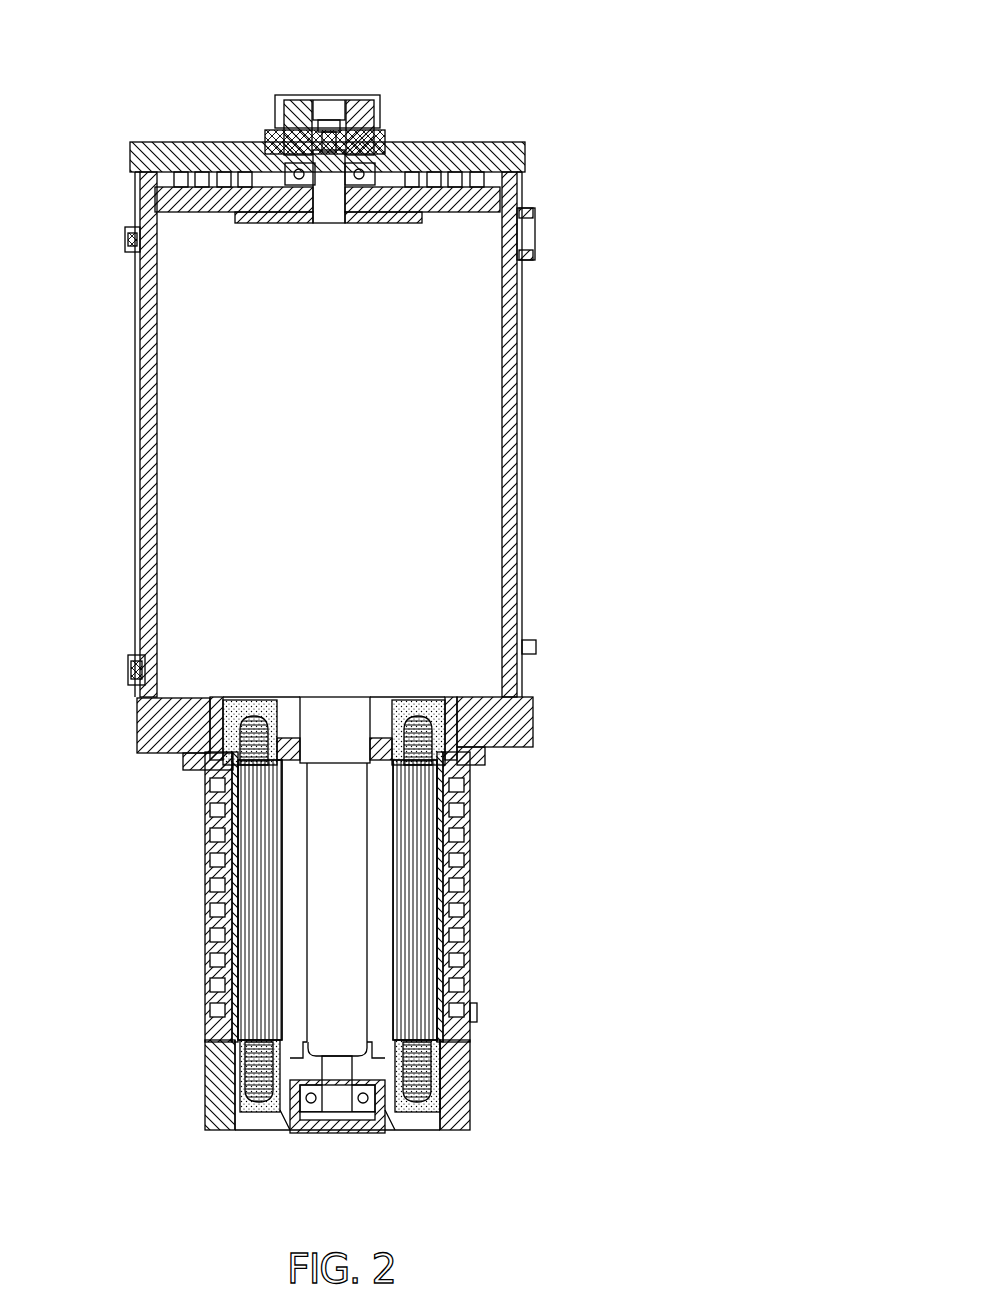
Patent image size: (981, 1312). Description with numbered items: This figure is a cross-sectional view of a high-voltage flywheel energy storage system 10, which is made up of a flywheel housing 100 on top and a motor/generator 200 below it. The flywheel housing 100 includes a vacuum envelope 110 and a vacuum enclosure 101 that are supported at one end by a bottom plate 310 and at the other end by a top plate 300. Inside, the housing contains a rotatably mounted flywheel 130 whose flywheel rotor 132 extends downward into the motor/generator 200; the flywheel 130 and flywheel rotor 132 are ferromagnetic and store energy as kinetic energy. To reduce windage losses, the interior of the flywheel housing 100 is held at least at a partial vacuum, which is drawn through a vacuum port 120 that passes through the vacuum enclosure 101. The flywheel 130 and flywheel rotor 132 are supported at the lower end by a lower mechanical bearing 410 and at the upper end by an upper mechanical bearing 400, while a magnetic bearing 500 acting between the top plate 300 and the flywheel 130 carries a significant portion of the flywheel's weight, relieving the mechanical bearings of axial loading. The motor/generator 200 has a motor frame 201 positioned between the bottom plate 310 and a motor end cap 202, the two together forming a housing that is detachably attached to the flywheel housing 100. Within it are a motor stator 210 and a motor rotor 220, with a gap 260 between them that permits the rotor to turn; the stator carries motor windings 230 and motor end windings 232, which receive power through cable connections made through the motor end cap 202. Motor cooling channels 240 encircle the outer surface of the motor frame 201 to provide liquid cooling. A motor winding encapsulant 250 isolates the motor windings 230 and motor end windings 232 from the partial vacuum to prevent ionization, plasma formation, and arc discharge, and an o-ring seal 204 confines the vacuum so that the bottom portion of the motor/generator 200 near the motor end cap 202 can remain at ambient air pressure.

The high-voltage flywheel energy storage system 10 is at (586, 45).
The flywheel housing 100 is at (634, 402).
The vacuum enclosure 101 is at (527, 348).
The vacuum envelope 110 is at (520, 400).
The vacuum port 120 is at (549, 238).
The flywheel 130 is at (480, 512).
The flywheel rotor 132 is at (310, 830).
The motor/generator 200 is at (587, 945).
The motor frame 201 is at (472, 1030).
The motor end cap 202 is at (470, 1106).
The o-ring seal 204 is at (278, 1125).
The motor stator 210 is at (470, 920).
The motor rotor 220 is at (465, 790).
The motor windings 230 is at (440, 827).
The motor cooling channels 240 is at (465, 866).
The motor winding encapsulant 250 is at (230, 705).
The gap 260 is at (280, 972).
The top plate 300 is at (497, 140).
The bottom plate 310 is at (140, 735).
The motor end windings 232 is at (530, 696).
The upper mechanical bearing 400 is at (379, 93).
The lower mechanical bearing 410 is at (375, 1128).
The magnetic bearing 500 is at (505, 195).